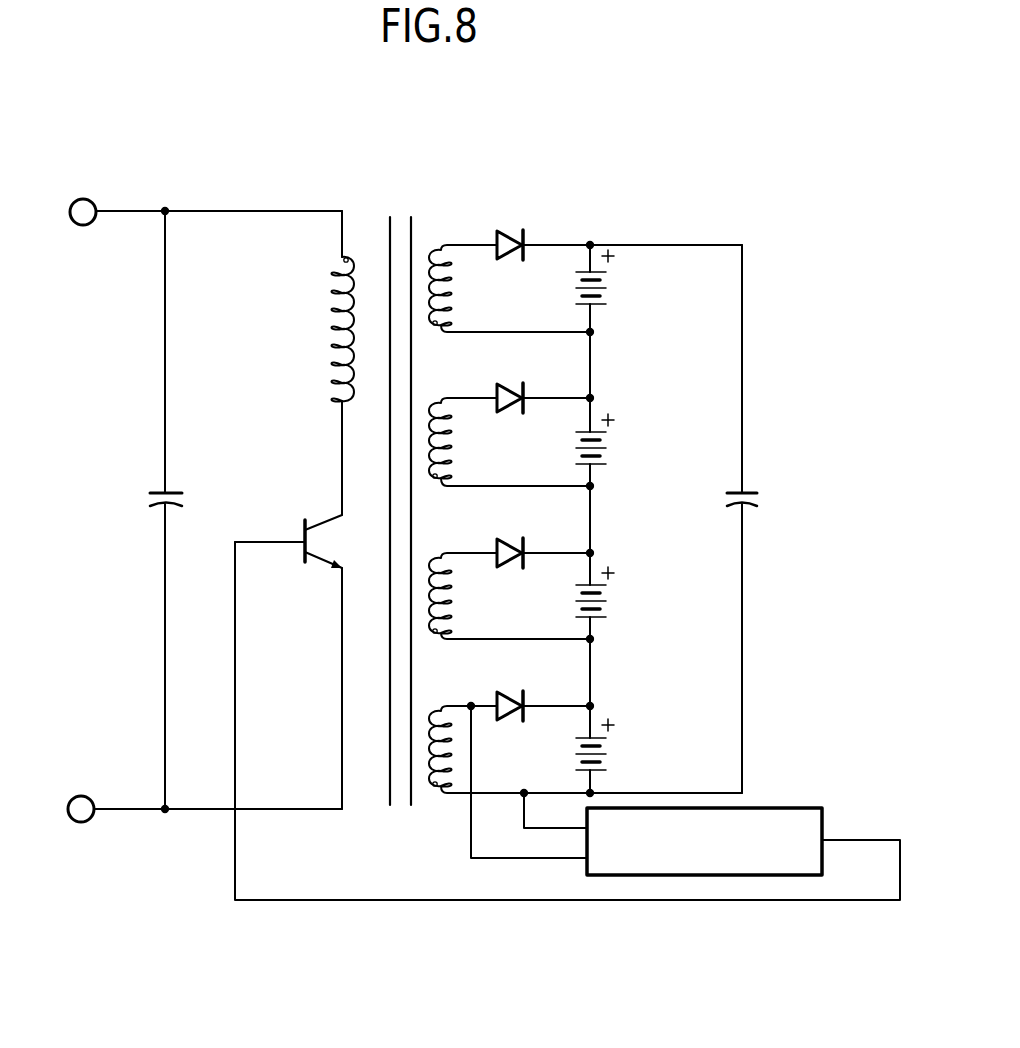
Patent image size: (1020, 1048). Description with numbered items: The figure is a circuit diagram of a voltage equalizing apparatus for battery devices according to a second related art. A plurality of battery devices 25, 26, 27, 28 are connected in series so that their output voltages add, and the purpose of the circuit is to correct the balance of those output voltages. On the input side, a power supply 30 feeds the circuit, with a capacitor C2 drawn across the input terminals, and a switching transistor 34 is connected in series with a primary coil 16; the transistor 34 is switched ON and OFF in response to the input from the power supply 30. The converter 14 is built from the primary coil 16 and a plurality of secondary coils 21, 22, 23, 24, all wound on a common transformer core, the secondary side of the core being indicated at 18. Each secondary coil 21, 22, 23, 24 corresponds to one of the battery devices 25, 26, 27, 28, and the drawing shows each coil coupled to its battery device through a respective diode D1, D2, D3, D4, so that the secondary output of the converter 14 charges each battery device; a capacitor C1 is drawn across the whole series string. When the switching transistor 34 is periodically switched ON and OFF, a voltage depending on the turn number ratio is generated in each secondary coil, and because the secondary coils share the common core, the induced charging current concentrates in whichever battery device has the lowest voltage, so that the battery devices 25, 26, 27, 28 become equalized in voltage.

The converter 14 is at (365, 220).
The primary coil 16 is at (322, 300).
The secondary winding 18 is at (418, 236).
The secondary coil 21 is at (452, 285).
The secondary coil 22 is at (452, 440).
The secondary coil 23 is at (452, 593).
The secondary coil 24 is at (440, 706).
The battery device 25 is at (593, 318).
The battery device 26 is at (592, 408).
The battery device 27 is at (592, 565).
The battery device 28 is at (592, 720).
The power supply 30 is at (83, 226).
The switching transistor 34 is at (303, 533).
The diode D1 is at (617, 229).
The diode D2 is at (542, 384).
The diode D3 is at (542, 538).
The diode D4 is at (542, 691).
The output capacitor C1 is at (762, 519).
The input capacitor C2 is at (146, 510).